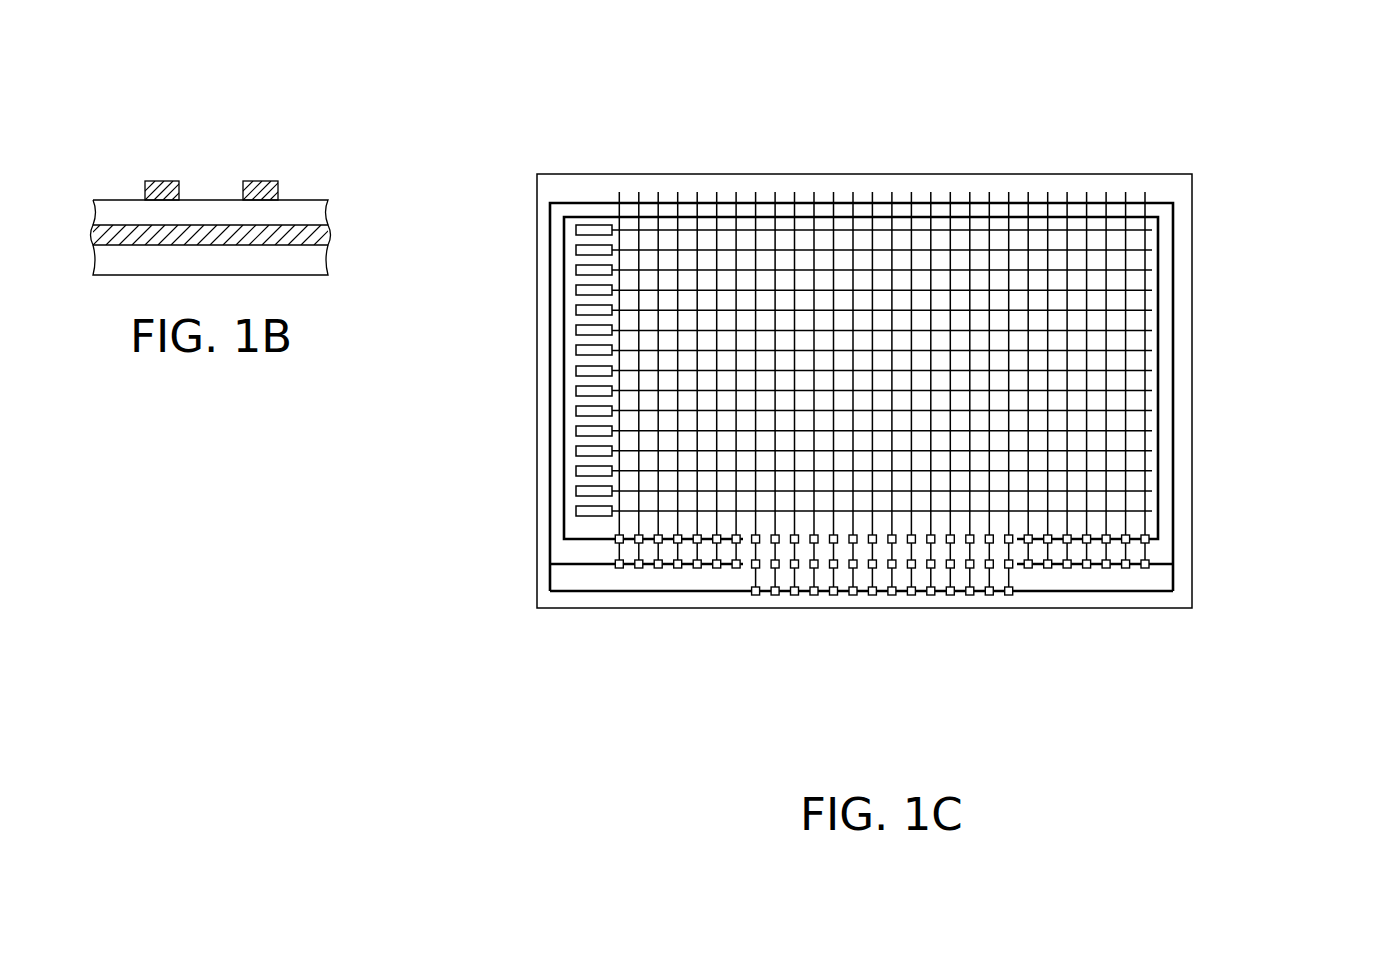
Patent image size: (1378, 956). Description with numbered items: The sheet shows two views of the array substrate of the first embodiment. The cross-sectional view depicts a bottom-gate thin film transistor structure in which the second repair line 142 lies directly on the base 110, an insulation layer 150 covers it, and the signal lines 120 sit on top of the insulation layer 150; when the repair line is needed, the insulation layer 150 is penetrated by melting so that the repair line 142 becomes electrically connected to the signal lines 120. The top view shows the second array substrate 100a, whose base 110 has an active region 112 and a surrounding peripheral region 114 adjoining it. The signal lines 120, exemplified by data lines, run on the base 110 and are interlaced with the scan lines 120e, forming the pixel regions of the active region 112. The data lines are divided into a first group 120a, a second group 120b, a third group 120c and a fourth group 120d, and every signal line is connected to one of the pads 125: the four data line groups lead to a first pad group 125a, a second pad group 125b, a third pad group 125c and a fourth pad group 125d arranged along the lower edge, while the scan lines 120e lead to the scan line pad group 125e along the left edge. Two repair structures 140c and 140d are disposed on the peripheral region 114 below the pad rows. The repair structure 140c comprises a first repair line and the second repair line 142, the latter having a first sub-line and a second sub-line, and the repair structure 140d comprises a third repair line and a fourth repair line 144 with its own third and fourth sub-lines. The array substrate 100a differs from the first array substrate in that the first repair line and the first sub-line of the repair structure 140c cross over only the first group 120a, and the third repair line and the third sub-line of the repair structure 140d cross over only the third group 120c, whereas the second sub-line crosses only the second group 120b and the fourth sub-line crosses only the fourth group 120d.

In FIG. 1C, the array substrate 100a is at (522, 33).
In FIG. 1B, the base 110 is at (328, 262).
In FIG. 1C, the base 110 is at (571, 170).
In FIG. 1C, the active region 112 is at (1117, 248).
In FIG. 1C, the peripheral region 114 is at (1180, 185).
In FIG. 1B, the signal lines 120 is at (258, 176).
In FIG. 1C, the signal lines 120 is at (955, 310).
In FIG. 1C, the first group 120a is at (1148, 176).
In FIG. 1C, the second group 120b is at (1012, 176).
In FIG. 1C, the third group 120c is at (742, 176).
In FIG. 1C, the fourth group 120d is at (877, 176).
In FIG. 1C, the scan lines 120e is at (1159, 233).
In FIG. 1C, the pads 125 is at (792, 505).
In FIG. 1C, the first pad group 125a is at (645, 668).
In FIG. 1C, the second pad group 125b is at (876, 572).
In FIG. 1C, the third pad group 125c is at (613, 572).
In FIG. 1C, the fourth pad group 125d is at (739, 572).
In FIG. 1C, the scan line pad group 125e is at (572, 227).
In FIG. 1C, the repair structure 140c is at (1270, 510).
In FIG. 1C, the repair structure 140d is at (442, 508).
In FIG. 1B, the second repair line 142 is at (328, 232).
In FIG. 1C, the second repair line 142 is at (1173, 551).
In FIG. 1C, the fourth repair line 144 is at (550, 548).
In FIG. 1B, the insulation layer 150 is at (328, 202).